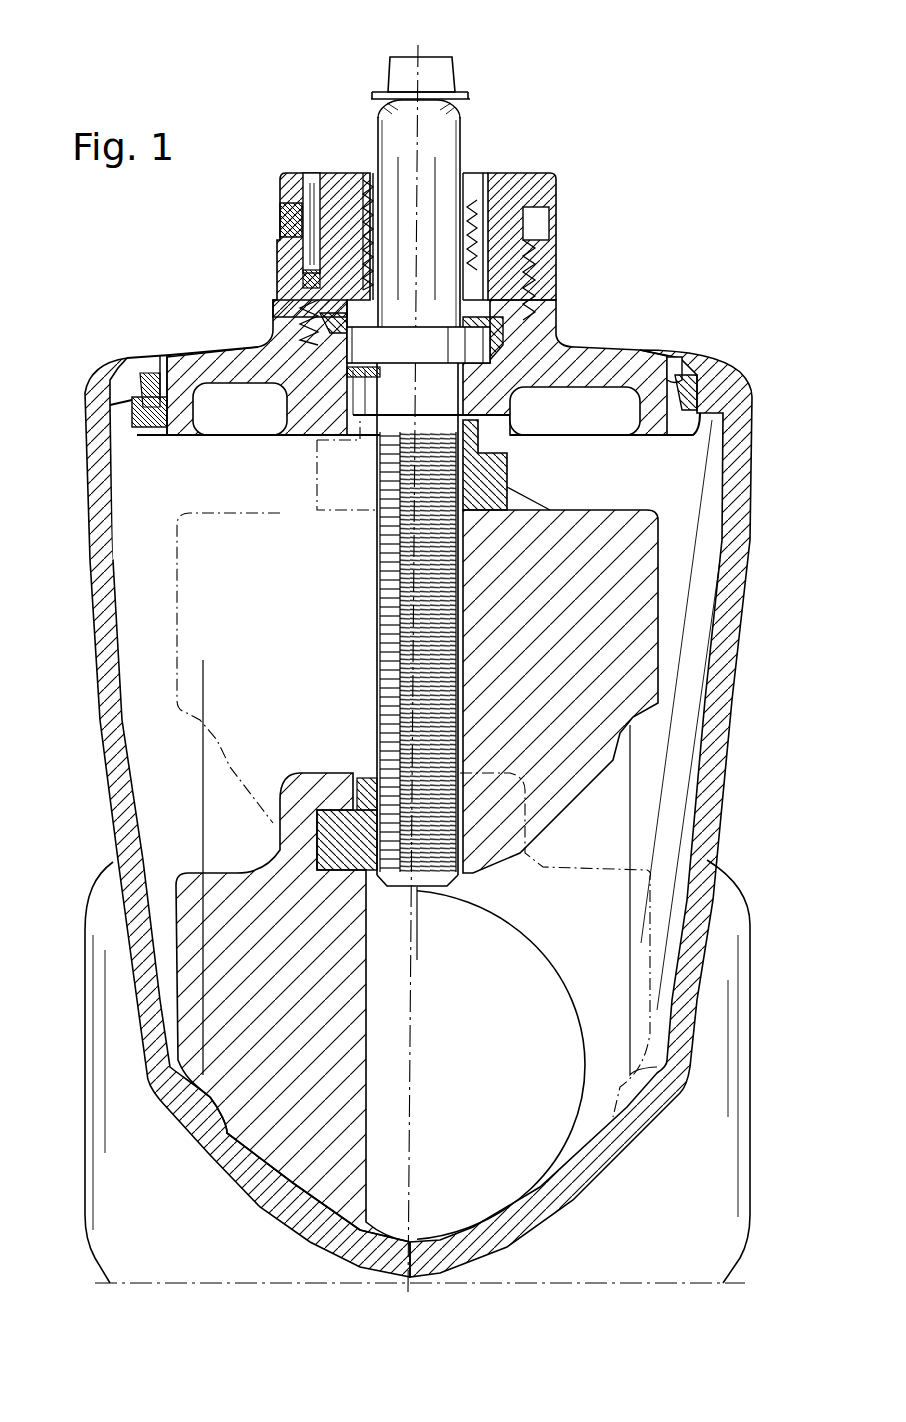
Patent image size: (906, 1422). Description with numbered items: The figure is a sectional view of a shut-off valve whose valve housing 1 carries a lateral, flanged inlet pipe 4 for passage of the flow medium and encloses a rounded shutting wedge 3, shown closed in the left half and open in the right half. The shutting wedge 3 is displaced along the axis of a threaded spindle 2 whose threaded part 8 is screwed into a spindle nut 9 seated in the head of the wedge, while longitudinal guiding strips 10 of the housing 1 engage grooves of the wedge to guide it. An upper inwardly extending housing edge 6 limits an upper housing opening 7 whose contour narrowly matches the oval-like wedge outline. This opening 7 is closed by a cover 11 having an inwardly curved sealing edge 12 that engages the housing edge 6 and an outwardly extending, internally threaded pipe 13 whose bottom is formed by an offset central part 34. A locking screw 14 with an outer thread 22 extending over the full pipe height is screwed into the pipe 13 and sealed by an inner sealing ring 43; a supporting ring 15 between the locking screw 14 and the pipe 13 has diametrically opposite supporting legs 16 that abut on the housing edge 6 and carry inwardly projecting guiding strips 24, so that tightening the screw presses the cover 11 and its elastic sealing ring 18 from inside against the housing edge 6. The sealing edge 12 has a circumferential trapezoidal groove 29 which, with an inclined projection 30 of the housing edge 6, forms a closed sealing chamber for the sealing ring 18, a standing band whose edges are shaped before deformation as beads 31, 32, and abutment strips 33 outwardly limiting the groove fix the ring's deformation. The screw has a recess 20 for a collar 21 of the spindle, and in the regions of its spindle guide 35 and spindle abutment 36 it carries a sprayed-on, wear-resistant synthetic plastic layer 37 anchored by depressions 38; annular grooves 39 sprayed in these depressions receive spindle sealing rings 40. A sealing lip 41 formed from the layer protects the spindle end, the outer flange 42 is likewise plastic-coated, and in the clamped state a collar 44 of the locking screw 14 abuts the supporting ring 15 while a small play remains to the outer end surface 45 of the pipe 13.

The valve housing 1 is at (718, 750).
The threaded spindle 2 is at (453, 140).
The shutting wedge 3 is at (217, 930).
The inlet pipe 4 is at (720, 940).
The housing edge 6 is at (720, 390).
The housing opening 7 is at (672, 363).
The threaded part 8 is at (398, 597).
The spindle nut 9 is at (493, 473).
The guiding strips 10 is at (143, 730).
The cover 11 is at (617, 367).
The sealing edge 12 is at (647, 432).
The pipe 13 is at (547, 297).
The locking screw 14 is at (533, 173).
The supporting ring 15 is at (552, 217).
The supporting legs 16 is at (270, 282).
The elastic sealing ring 18 is at (143, 393).
The recess 20 is at (330, 370).
The collar 21 is at (525, 333).
The outer thread 22 is at (537, 267).
The guiding strips 24 is at (267, 330).
The trapezoidal groove 29 is at (687, 397).
The inclined projection 30 is at (713, 387).
The bead 31 is at (160, 390).
The bead 32 is at (162, 425).
The abutment strips 33 is at (140, 422).
The central part 34 is at (323, 397).
The spindle guide 35 is at (370, 180).
The spindle abutment 36 is at (418, 351).
The synthetic plastic layer 37 is at (330, 213).
The depressions 38 is at (298, 302).
The annular grooves 39 is at (520, 173).
The spindle sealing rings 40 is at (297, 213).
The sealing lip 41 is at (373, 163).
The flange 42 is at (523, 187).
The inner sealing ring 43 is at (547, 387).
The collar 44 is at (543, 190).
The outer end surface 45 is at (557, 243).